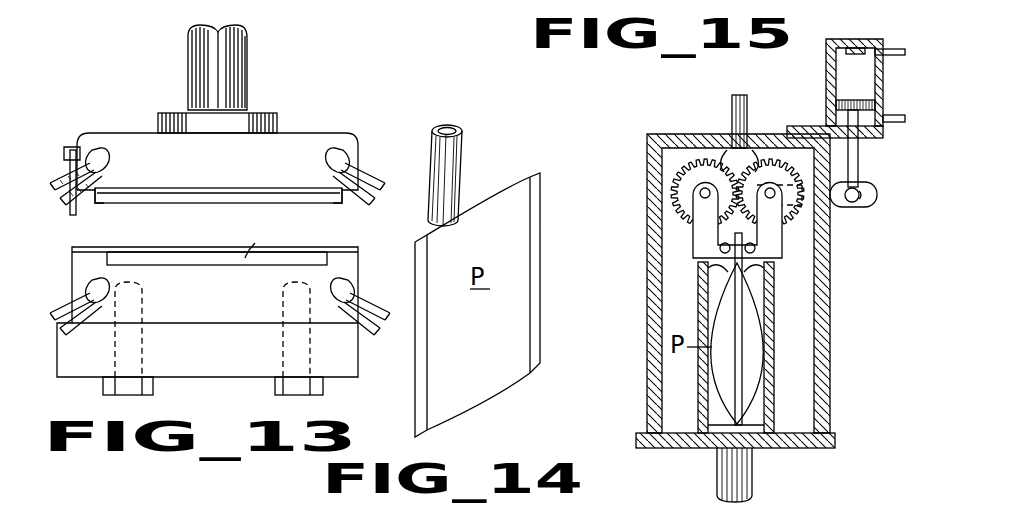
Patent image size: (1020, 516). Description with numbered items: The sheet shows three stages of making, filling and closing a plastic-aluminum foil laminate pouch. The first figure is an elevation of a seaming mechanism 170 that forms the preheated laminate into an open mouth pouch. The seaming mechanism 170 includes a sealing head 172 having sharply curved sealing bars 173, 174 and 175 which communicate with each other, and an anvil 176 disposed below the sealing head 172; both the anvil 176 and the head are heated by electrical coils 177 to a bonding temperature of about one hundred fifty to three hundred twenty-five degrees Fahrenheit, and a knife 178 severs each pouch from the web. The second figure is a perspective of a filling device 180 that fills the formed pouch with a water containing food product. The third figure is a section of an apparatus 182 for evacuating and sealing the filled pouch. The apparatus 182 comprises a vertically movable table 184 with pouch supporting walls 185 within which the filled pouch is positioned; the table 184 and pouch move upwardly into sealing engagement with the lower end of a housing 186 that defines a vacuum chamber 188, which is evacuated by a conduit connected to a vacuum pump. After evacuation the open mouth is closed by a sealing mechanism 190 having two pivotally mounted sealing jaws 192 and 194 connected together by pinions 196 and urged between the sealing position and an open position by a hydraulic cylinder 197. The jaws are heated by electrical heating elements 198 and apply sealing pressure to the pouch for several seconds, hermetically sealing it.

In FIG. 13, the seaming mechanism 170 is at (270, 100).
In FIG. 13, the sealing head 172 is at (300, 136).
In FIG. 13, the sealing bar 173 is at (94, 198).
In FIG. 13, the sealing bar 174 is at (246, 200).
In FIG. 13, the sealing bar 175 is at (342, 198).
In FIG. 13, the anvil 176 is at (232, 300).
In FIG. 13, the electrical coils 177 is at (97, 150).
In FIG. 13, the knife 178 is at (70, 205).
In FIG. 14, the filling device 180 is at (463, 167).
In FIG. 15, the evacuating and sealing apparatus 182 is at (749, 253).
In FIG. 15, the vertically movable table 184 is at (638, 440).
In FIG. 15, the pouch supporting walls 185 is at (700, 368).
In FIG. 15, the housing 186 is at (822, 312).
In FIG. 15, the vacuum chamber 188 is at (668, 303).
In FIG. 15, the sealing mechanism 190 is at (690, 230).
In FIG. 15, the sealing jaw 192 is at (718, 248).
In FIG. 15, the sealing jaw 194 is at (758, 250).
In FIG. 15, the pinions 196 is at (733, 150).
In FIG. 15, the hydraulic cylinder 197 is at (826, 68).
In FIG. 15, the electrical heating elements 198 is at (712, 274).